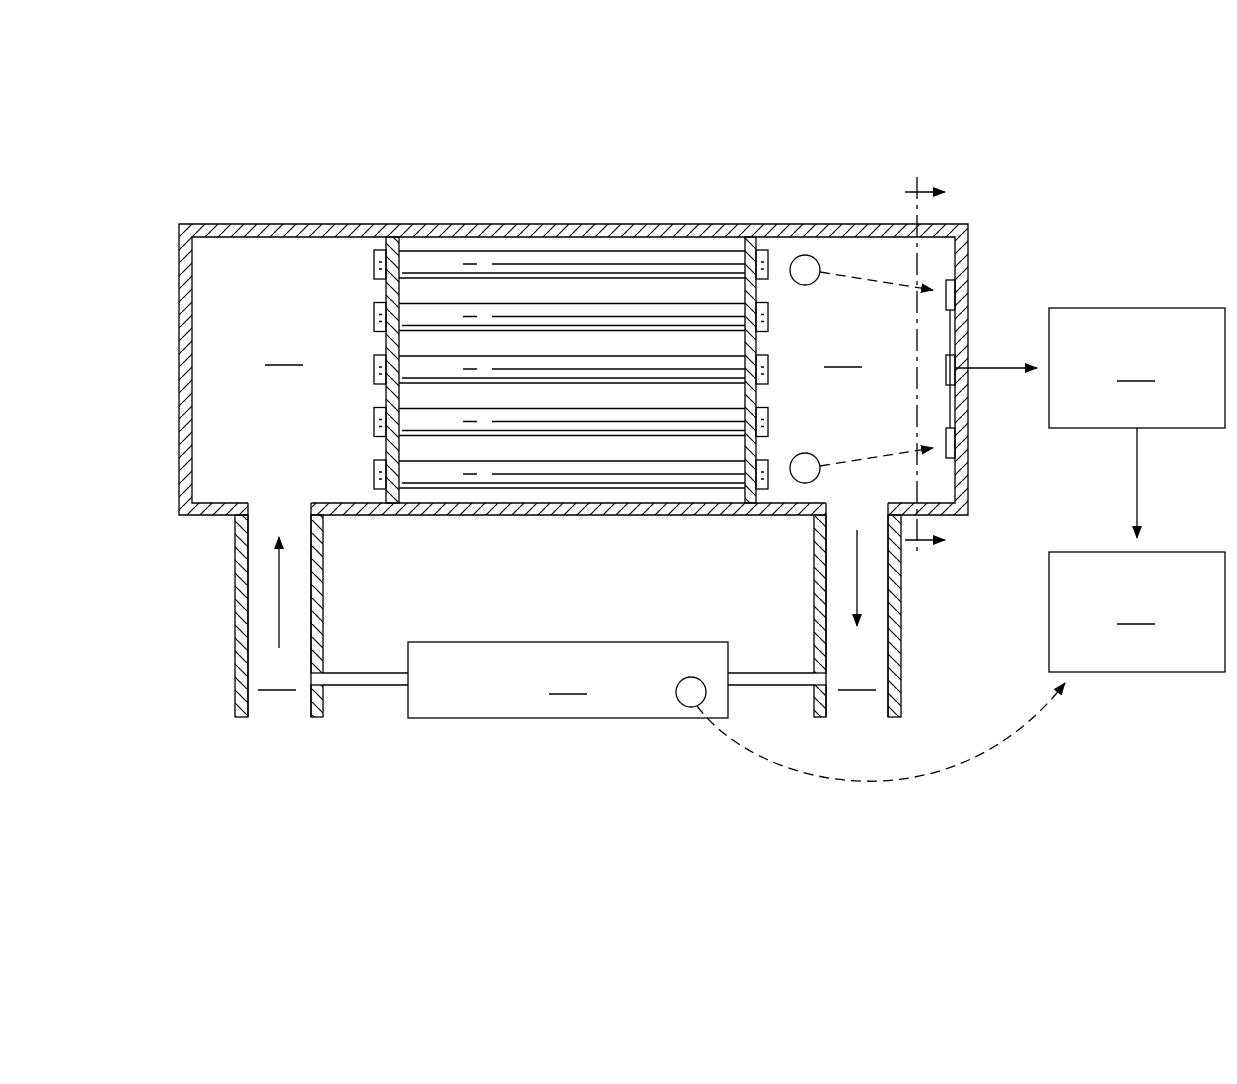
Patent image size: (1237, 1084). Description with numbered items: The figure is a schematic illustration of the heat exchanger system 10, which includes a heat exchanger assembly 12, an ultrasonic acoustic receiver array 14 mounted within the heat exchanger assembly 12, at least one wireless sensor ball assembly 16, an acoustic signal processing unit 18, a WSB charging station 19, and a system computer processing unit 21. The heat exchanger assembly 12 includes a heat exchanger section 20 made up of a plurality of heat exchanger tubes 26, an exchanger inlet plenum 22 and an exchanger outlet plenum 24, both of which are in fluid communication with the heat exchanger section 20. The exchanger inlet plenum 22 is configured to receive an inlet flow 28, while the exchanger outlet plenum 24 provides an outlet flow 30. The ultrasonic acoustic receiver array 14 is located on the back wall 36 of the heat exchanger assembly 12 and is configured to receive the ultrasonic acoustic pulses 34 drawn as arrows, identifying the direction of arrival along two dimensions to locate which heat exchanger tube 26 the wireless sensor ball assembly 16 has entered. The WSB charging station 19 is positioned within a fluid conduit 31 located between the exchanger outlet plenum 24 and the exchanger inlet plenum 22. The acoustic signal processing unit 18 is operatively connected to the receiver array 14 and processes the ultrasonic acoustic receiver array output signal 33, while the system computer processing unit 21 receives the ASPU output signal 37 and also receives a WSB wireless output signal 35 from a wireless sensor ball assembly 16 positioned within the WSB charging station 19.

The heat exchanger system 10 is at (340, 163).
The heat exchanger assembly 12 is at (537, 215).
The ultrasonic acoustic receiver array 14 is at (937, 357).
The wireless sensor ball assembly 16 is at (803, 255).
The acoustic signal processing unit 18 is at (1137, 368).
The WSB charging station 19 is at (525, 680).
The heat exchanger section 20 is at (372, 526).
The system computer processing unit 21 is at (1137, 612).
The exchanger inlet plenum 22 is at (289, 370).
The exchanger outlet plenum 24 is at (855, 370).
The heat exchanger tubes 26 is at (665, 263).
The inlet flow 28 is at (279, 610).
The outlet flow 30 is at (857, 610).
The fluid conduit 31 is at (768, 688).
The ultrasonic acoustic receiver array output signal 33 is at (1008, 370).
The ultrasonic acoustic pulses 34 is at (863, 273).
The WSB wireless output signal 35 is at (935, 779).
The back wall 36 is at (970, 236).
The ASPU output signal 37 is at (1137, 482).